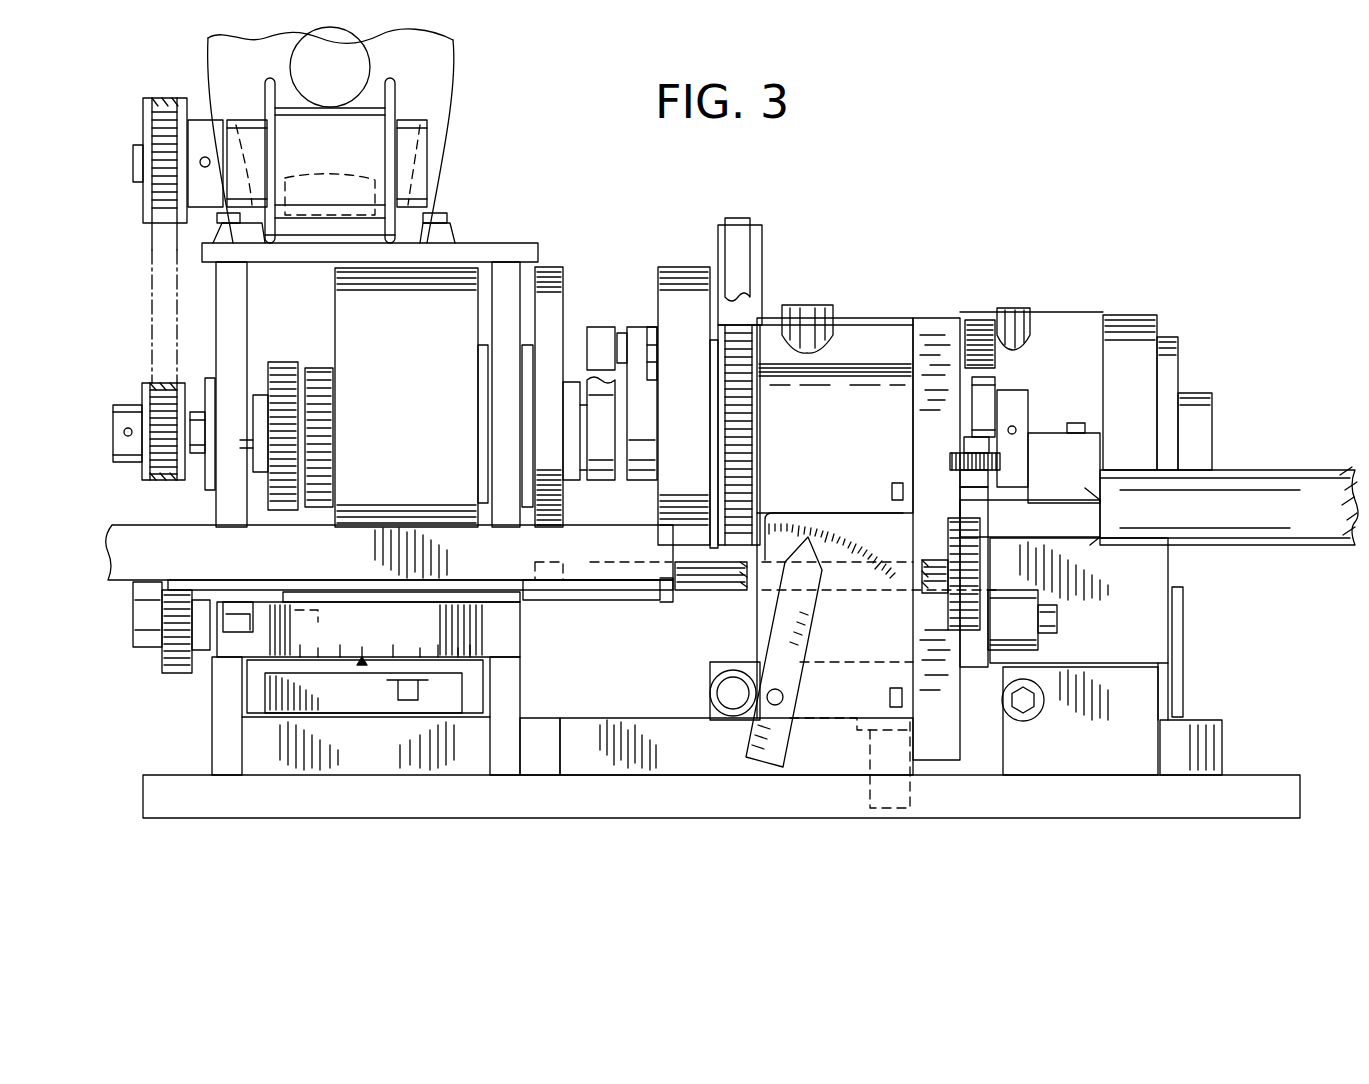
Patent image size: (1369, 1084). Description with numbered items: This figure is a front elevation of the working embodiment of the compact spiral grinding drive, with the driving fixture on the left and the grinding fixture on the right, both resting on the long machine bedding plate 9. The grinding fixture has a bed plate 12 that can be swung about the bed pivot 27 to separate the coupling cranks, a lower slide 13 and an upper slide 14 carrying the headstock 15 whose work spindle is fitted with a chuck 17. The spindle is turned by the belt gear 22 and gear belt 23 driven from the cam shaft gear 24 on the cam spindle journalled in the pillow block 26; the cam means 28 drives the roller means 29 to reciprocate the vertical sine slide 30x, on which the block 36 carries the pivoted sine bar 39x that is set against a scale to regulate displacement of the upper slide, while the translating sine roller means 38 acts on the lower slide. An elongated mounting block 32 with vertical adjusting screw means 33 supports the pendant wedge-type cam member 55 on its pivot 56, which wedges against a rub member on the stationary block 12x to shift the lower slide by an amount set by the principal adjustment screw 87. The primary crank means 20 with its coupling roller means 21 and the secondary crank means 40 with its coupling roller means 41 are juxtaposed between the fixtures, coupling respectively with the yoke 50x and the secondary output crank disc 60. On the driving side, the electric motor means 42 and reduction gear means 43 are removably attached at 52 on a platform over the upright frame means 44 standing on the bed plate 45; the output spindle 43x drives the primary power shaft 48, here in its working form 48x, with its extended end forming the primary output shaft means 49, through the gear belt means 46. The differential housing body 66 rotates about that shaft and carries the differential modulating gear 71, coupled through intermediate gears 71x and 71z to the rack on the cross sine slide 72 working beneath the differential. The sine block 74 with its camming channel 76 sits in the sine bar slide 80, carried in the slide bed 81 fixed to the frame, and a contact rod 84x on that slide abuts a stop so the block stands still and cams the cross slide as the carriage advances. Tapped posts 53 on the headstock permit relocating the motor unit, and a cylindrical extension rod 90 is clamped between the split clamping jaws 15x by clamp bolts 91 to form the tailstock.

The machine bedding plate 9 is at (733, 813).
The bed plate 12 is at (708, 757).
The stationary block 12x is at (1098, 763).
The lower slide 13 is at (710, 700).
The upper slide 14 is at (752, 640).
The headstock 15 is at (874, 312).
The split clamping jaws 15x is at (1100, 497).
The chuck 17 is at (1212, 405).
The primary crank means 20 is at (634, 327).
The coupling roller means 21 is at (612, 327).
The belt gear 22 is at (762, 225).
The gear belt 23 is at (745, 250).
The cam shaft gear 24 is at (745, 413).
The pillow block 26 is at (858, 463).
The bed pivot 27 is at (868, 796).
The cam means 28 is at (985, 390).
The roller means 29 is at (975, 320).
The vertical sine slide 30x is at (925, 325).
The mounting block 32 is at (980, 513).
The vertical adjusting screw means 33 is at (995, 462).
The block 36 is at (850, 515).
The translating sine roller means 38 is at (725, 672).
The sine bar 39x is at (813, 628).
The secondary crank means 40 is at (660, 270).
The coupling roller means 41 is at (550, 605).
The electric motor means 42 is at (447, 100).
The reduction gear means 43 is at (430, 77).
The output spindle 43x is at (153, 98).
The frame means 44 is at (510, 275).
The bed plate 45 is at (388, 747).
The gear belt means 46 is at (150, 246).
The primary power shaft 48 is at (193, 410).
The driven pulley 48x is at (150, 383).
The primary output shaft means 49 is at (578, 388).
The yoke 50x is at (607, 476).
The removable attachment 52 is at (437, 218).
The tapped posts 53 is at (825, 310).
The pendant wedge-type cam member 55 is at (1002, 602).
The pivot 56 is at (1057, 622).
The secondary output crank disc 60 is at (563, 282).
The differential housing body 66 is at (410, 428).
The differential modulating gear 71 is at (285, 383).
The intermediate gear 71z is at (277, 360).
The intermediate gear 71x is at (175, 670).
The cross sine slide 72 is at (482, 670).
The sine block 74 is at (395, 627).
The channel 76 is at (235, 612).
The sine bar slide 80 is at (482, 588).
The slide bed 81 is at (342, 567).
The contact rod 84x is at (730, 585).
The principal adjustment screw 87 is at (1047, 712).
The extension rod 90 is at (1265, 510).
The clamp bolts 91 is at (1078, 423).